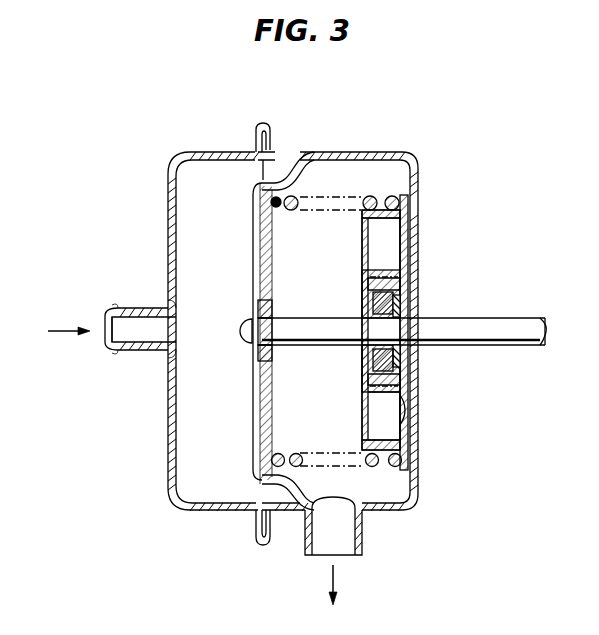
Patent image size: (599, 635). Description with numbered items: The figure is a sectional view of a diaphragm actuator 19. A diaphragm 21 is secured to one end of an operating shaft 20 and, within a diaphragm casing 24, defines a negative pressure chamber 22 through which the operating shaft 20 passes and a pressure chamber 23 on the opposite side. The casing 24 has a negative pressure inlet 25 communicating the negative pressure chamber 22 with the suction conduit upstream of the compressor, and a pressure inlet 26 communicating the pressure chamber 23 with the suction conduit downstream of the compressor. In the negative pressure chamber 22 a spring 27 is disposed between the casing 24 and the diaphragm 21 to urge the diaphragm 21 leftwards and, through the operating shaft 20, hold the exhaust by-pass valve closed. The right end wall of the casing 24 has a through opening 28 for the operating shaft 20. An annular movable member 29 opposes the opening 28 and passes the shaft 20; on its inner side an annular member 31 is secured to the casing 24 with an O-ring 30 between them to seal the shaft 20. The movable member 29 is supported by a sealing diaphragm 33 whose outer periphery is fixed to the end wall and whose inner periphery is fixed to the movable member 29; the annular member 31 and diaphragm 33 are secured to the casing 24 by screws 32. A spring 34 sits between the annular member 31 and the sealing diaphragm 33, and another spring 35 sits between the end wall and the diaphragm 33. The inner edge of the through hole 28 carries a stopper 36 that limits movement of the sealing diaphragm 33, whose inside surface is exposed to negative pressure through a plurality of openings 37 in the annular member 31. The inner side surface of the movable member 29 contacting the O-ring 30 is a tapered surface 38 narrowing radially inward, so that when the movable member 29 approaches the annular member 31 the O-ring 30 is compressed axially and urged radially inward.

The diaphragm actuator 19 is at (152, 183).
The operating shaft 20 is at (530, 346).
The diaphragm 21 is at (278, 160).
The negative pressure chamber 22 is at (380, 495).
The pressure chamber 23 is at (220, 485).
The diaphragm casing 24 is at (204, 151).
The negative pressure inlet 25 is at (346, 540).
The pressure inlet 26 is at (105, 333).
The spring 27 is at (370, 196).
The through opening 28 is at (418, 348).
The annular movable member 29 is at (430, 308).
The O-ring 30 is at (395, 300).
The annular member 31 is at (400, 252).
The screws 32 is at (408, 215).
The sealing diaphragm 33 is at (402, 262).
The spring 34 is at (418, 432).
The spring 35 is at (427, 300).
The stopper 36 is at (410, 368).
The openings 37 is at (405, 462).
The tapered surface 38 is at (405, 394).